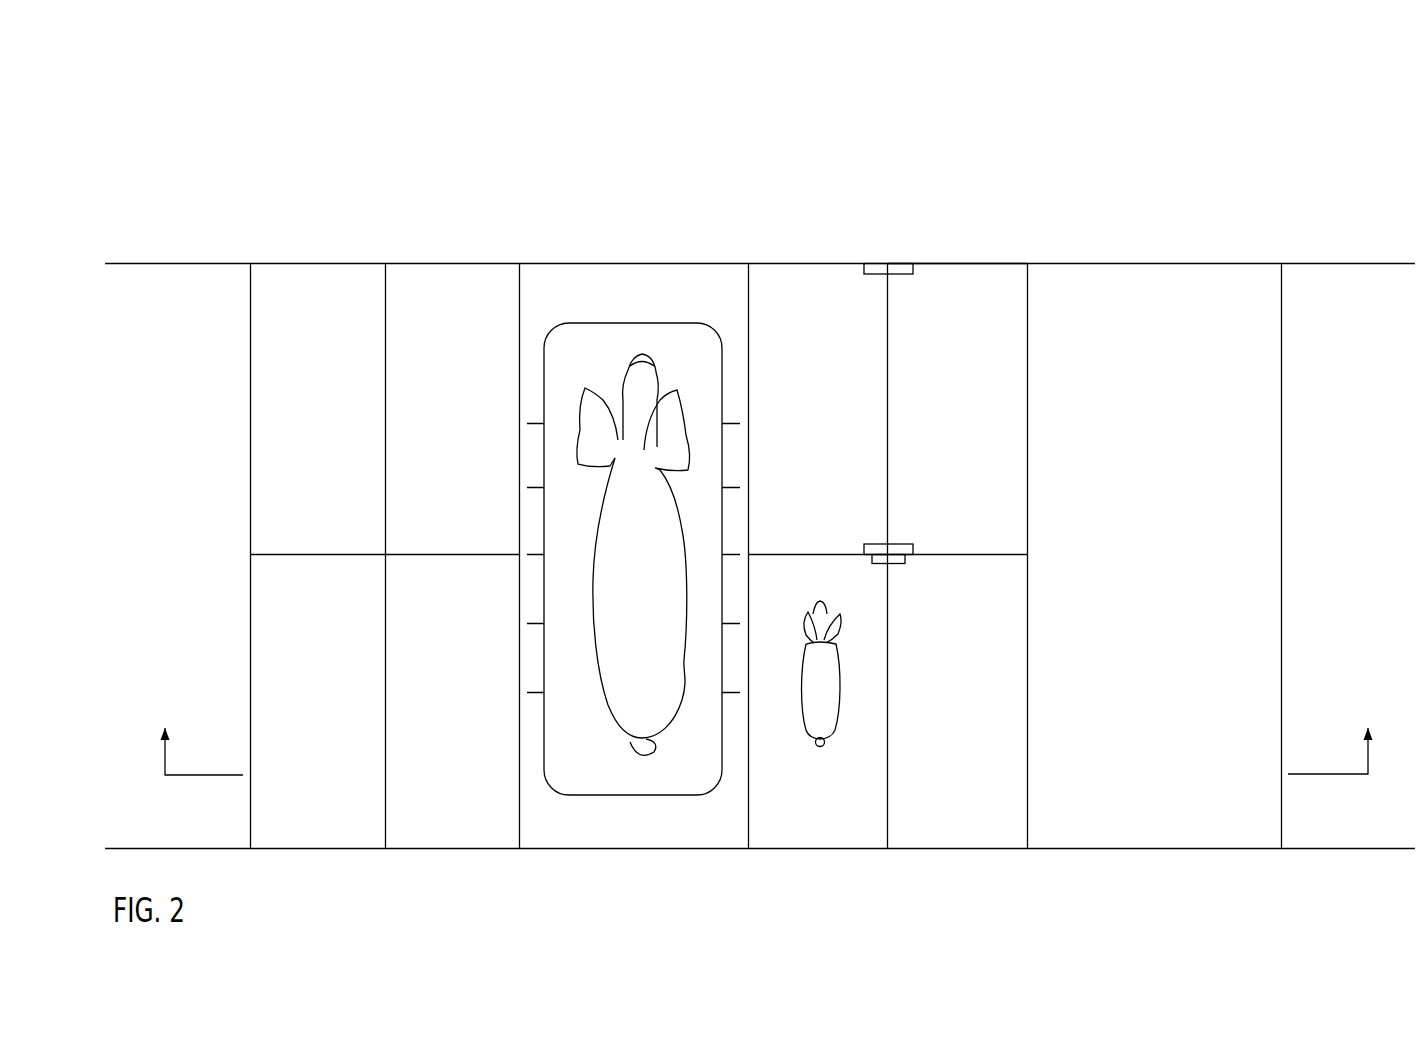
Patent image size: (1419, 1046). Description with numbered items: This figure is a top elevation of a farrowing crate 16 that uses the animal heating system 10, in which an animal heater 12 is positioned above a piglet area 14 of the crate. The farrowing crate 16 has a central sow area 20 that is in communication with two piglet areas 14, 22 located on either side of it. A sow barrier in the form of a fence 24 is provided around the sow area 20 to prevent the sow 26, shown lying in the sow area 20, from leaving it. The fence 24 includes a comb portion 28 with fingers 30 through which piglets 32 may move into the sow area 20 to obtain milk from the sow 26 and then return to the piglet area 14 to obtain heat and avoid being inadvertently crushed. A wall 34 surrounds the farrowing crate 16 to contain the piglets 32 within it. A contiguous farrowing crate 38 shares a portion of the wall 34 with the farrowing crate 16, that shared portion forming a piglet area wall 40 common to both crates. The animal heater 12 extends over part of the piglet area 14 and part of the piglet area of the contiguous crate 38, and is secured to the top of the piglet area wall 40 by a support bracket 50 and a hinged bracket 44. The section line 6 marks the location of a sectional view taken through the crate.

The section line 6- 6 is at (766, 735).
The animal heating system 10 is at (870, 160).
The animal heater 12 is at (950, 248).
The piglet area 14 is at (827, 780).
The farrowing crate 16 is at (552, 232).
The sow area 20 is at (697, 278).
The piglet area 22 is at (448, 808).
The fence 24 is at (720, 335).
The sow 26 is at (612, 546).
The comb portion 28 is at (735, 487).
The fingers 30 is at (735, 555).
The piglets 32 is at (837, 657).
The wall 34 is at (590, 849).
The contiguous farrowing crate 38 is at (1184, 253).
The piglet area wall 40 is at (888, 708).
The hinged bracket 44 is at (887, 262).
The support bracket 50 is at (888, 548).